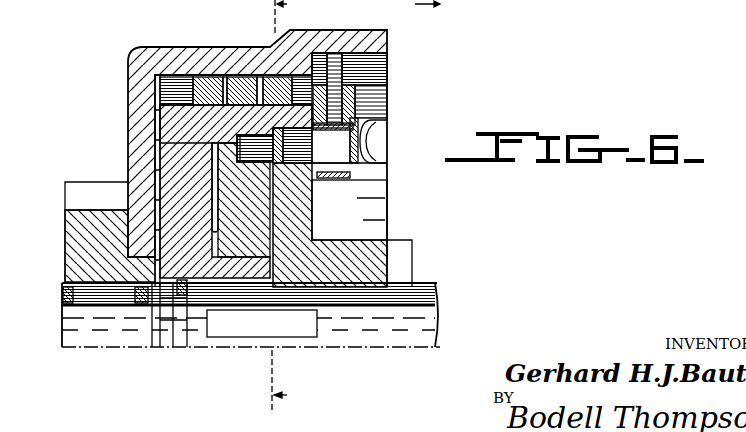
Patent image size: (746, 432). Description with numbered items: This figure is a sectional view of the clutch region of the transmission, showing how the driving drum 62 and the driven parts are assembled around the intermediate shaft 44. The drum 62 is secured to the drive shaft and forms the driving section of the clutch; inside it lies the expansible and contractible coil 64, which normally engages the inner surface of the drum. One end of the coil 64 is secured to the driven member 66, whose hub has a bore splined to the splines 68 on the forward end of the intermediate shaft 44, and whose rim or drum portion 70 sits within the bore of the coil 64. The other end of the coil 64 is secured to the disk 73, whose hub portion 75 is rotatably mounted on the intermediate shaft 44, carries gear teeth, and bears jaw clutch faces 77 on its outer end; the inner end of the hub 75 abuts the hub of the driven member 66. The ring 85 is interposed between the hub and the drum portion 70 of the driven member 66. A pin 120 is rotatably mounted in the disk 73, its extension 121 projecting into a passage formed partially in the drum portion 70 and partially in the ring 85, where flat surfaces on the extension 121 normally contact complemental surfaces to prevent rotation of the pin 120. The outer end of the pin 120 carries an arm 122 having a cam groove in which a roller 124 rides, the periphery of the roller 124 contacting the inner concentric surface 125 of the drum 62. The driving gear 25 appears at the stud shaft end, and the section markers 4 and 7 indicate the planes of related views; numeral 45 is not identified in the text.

The section line 4- 4 is at (365, 16).
The section line 7- 7 is at (288, 387).
The driving gear 25 is at (85, 190).
The intermediate shaft 44 is at (433, 313).
The key 45 is at (63, 292).
The drum 62 is at (158, 55).
The clutch member or band or coil 64 is at (205, 83).
The driven member 66 is at (183, 150).
The splines 68 is at (208, 327).
The rim or drum portion 70 is at (220, 121).
The disk 73 is at (303, 228).
The hub portion 75 is at (360, 246).
The jaw clutch faces 77 is at (403, 262).
The ring 85 is at (257, 212).
The pin 120 is at (357, 127).
The extension 121 is at (253, 140).
The arm 122 is at (355, 103).
The roller 124 is at (336, 58).
The inner concentric surface 125 is at (387, 62).